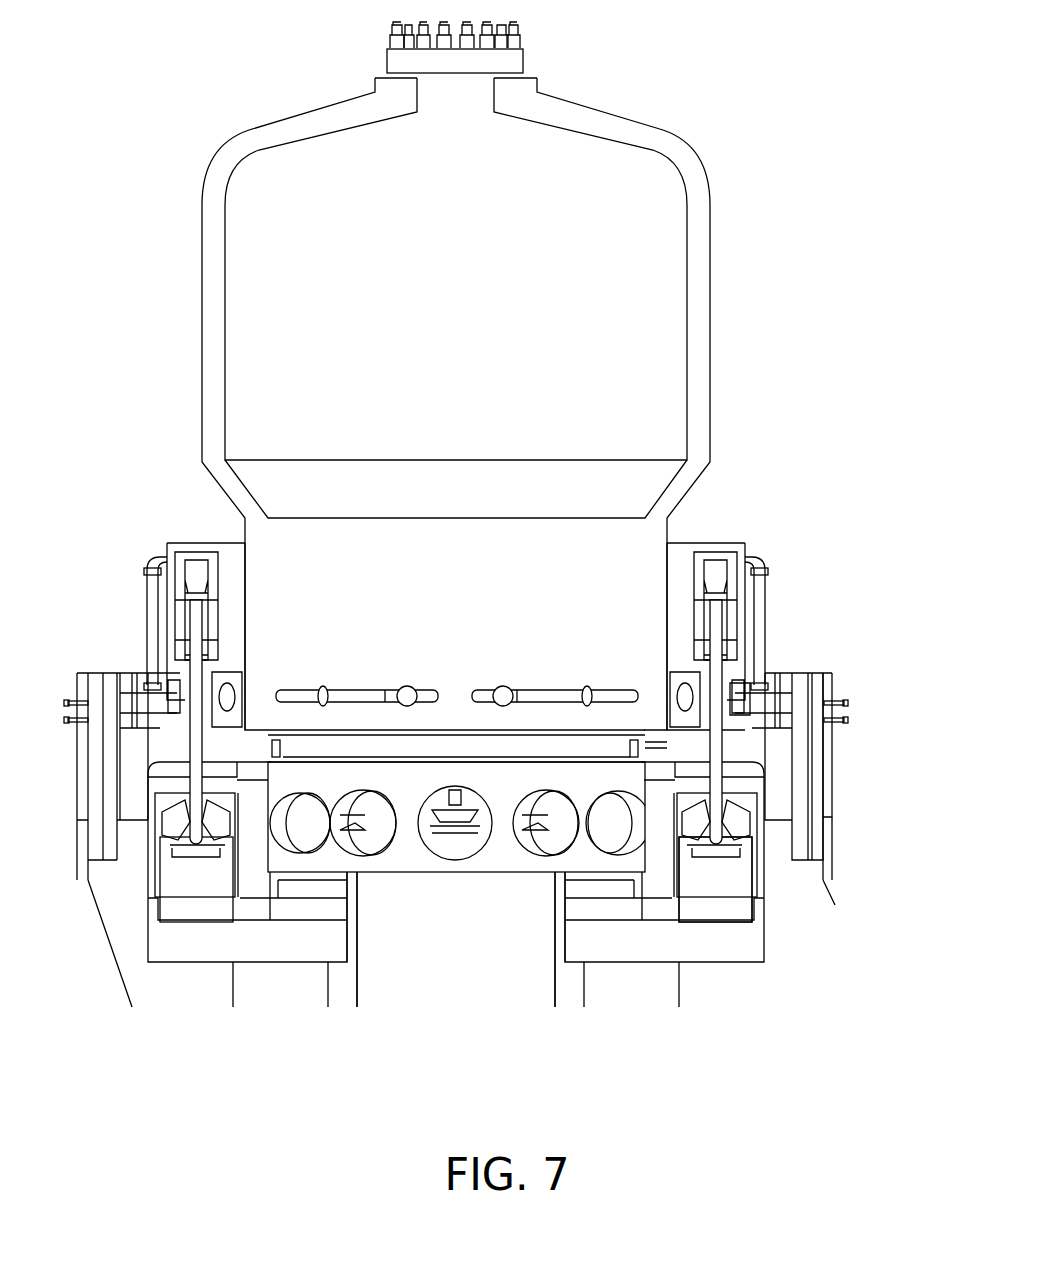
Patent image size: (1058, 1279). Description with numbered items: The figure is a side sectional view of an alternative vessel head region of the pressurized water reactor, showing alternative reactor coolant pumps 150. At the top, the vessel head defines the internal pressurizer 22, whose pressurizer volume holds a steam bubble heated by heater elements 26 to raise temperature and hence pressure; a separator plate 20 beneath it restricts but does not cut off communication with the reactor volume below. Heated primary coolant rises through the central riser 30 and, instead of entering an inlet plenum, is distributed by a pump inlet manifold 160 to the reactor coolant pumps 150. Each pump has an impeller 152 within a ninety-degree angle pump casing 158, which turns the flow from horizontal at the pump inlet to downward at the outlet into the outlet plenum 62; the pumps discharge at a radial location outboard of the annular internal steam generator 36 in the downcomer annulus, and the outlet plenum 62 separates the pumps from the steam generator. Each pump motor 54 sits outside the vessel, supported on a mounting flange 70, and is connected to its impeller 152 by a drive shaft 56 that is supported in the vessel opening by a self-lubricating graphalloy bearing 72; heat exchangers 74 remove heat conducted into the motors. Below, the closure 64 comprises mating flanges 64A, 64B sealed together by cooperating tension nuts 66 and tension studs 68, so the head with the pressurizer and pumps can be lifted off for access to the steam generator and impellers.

The separator plate 20 is at (525, 745).
The internal pressurizer 22 is at (368, 240).
The heater elements 26 is at (323, 686).
The central riser 30 is at (455, 907).
The internal steam generator 36 is at (298, 980).
The pump motor 54 is at (178, 605).
The drive shaft 56 is at (718, 772).
The outlet plenum 62 is at (190, 940).
The closure 64 is at (885, 806).
The mating flange 64A is at (851, 815).
The mating flange 64B is at (827, 792).
The tension nuts 66 is at (827, 673).
The tension studs 68 is at (812, 716).
The mounting flange 70 is at (737, 723).
The graphalloy bearing 72 is at (705, 745).
The heat exchangers 74 is at (150, 622).
The reactor coolant pumps 150 is at (158, 537).
The impellers 152 is at (160, 827).
The angle pump casings 158 is at (697, 922).
The pump inlet manifold 160 is at (422, 770).